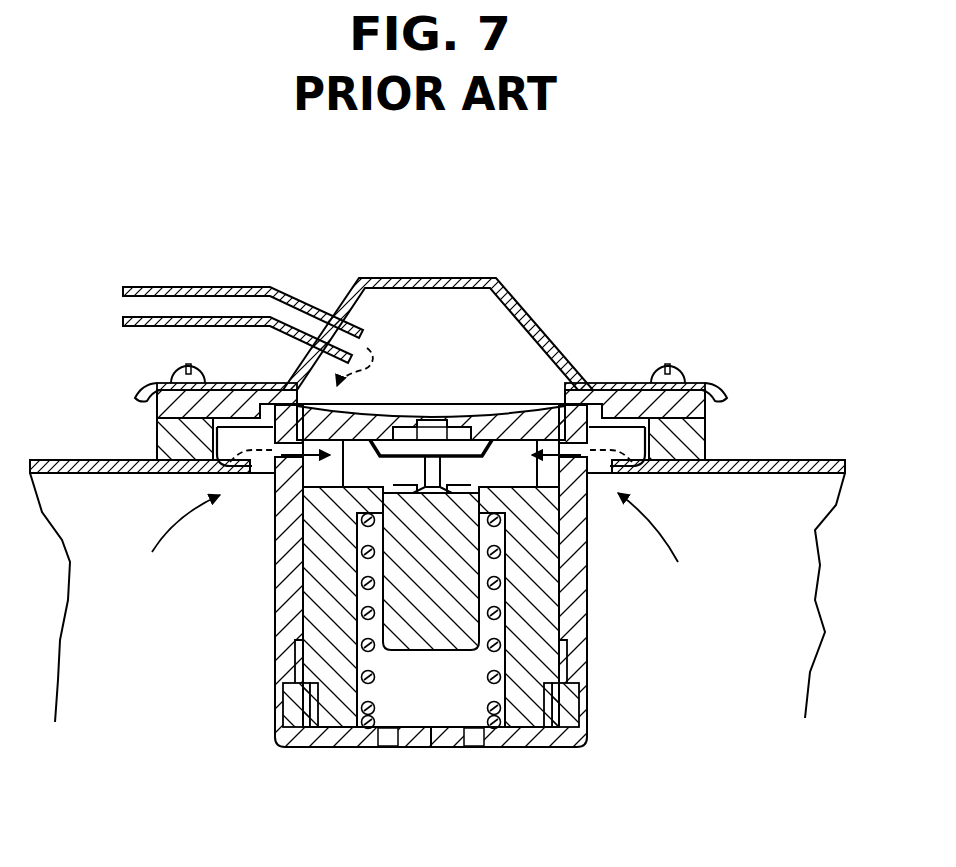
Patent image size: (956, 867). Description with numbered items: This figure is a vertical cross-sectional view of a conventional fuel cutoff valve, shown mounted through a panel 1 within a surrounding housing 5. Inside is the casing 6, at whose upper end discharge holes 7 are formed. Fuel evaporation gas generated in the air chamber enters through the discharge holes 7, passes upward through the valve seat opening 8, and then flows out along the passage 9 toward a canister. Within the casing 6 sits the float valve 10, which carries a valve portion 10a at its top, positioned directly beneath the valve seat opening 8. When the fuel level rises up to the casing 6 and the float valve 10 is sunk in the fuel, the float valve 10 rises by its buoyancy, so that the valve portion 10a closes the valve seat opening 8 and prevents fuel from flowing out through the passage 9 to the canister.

The vehicle body panel 1 is at (780, 462).
The housing 5 is at (272, 615).
The casing 6 is at (283, 642).
The discharge holes 7 is at (262, 474).
The valve seat opening 8 is at (434, 438).
The passage 9 is at (189, 287).
The float valve 10 is at (533, 622).
The valve portion 10a is at (430, 462).